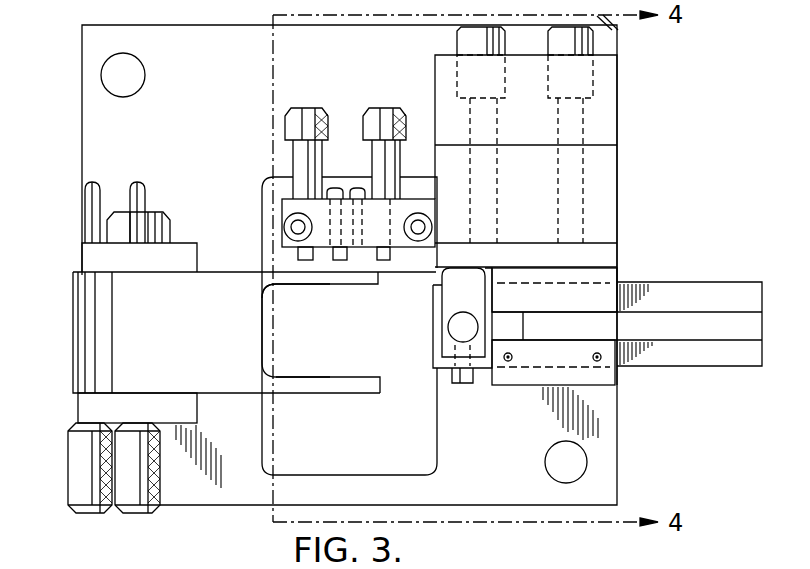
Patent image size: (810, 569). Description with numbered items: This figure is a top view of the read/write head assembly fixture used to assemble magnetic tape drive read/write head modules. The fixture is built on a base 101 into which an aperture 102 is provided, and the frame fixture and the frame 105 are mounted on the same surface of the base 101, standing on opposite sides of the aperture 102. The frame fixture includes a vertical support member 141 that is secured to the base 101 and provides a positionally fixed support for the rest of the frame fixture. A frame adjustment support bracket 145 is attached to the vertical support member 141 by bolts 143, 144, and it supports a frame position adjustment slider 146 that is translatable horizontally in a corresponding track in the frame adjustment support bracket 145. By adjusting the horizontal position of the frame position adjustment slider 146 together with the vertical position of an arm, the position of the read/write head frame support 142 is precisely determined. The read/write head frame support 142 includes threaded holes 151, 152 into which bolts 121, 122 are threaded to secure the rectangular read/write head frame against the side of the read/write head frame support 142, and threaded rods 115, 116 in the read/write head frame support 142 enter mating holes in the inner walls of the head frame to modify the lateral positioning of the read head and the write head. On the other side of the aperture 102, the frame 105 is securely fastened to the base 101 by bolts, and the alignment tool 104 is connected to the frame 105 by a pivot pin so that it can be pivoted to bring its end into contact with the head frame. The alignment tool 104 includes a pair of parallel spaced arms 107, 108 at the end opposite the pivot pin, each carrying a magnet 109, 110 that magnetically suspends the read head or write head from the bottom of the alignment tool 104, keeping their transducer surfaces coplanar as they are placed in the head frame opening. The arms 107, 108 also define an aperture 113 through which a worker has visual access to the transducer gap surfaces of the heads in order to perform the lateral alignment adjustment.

The base 101 is at (604, 448).
The aperture 102 is at (349, 326).
The alignment tool 104 is at (90, 322).
The frame 105 is at (84, 252).
The arm 107 is at (360, 284).
The arm 108 is at (362, 393).
The magnet 109 is at (294, 286).
The magnet 110 is at (292, 378).
The aperture 113 is at (330, 332).
The threaded rod 115 is at (322, 200).
The threaded rod 116 is at (394, 216).
The bolt 121 is at (314, 108).
The bolt 122 is at (383, 108).
The vertical support member 141 is at (617, 110).
The read/write head frame support 142 is at (617, 190).
The bolt 143 is at (457, 43).
The bolt 144 is at (595, 40).
The frame adjustment support bracket 145 is at (617, 272).
The frame position adjustment slider 146 is at (702, 290).
The threaded hole 151 is at (330, 212).
The threaded hole 152 is at (400, 220).